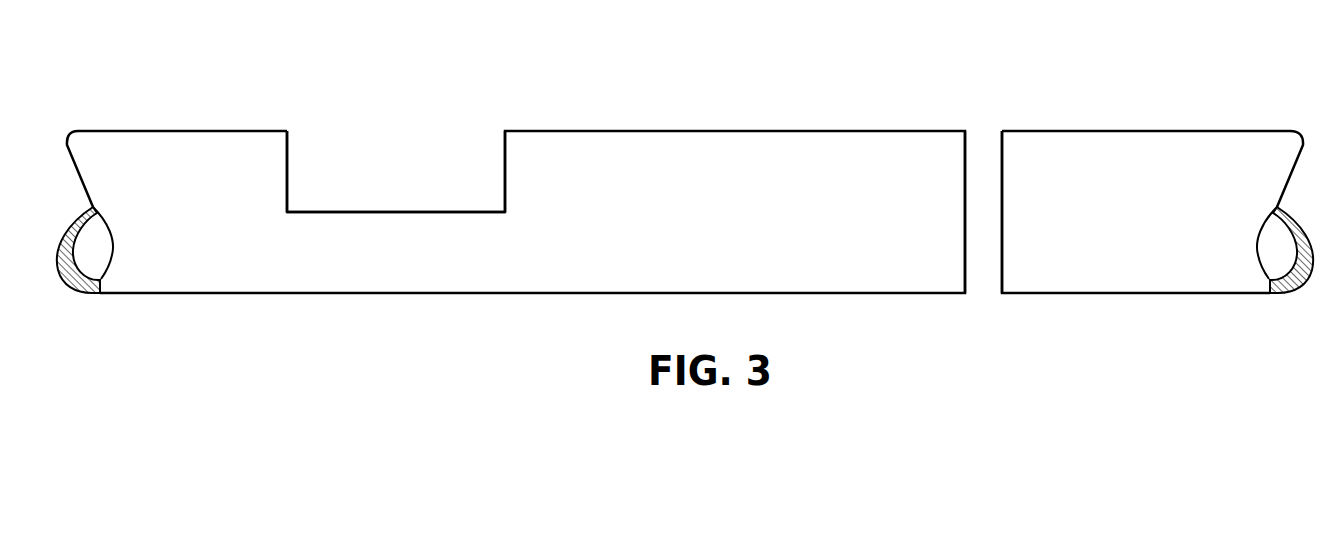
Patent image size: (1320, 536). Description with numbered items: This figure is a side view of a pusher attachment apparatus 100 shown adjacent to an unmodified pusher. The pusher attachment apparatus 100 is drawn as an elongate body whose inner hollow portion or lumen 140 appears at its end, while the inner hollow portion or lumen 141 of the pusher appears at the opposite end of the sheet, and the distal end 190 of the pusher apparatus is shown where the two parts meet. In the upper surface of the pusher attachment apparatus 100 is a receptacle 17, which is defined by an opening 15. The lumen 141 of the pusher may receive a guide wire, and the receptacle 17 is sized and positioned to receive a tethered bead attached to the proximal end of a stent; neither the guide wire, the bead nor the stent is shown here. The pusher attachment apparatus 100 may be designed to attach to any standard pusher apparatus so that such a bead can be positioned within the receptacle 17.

The pusher attachment apparatus 100 is at (724, 123).
The opening 15 is at (360, 212).
The receptacle 17 is at (420, 133).
The inner hollow portion or lumen of the pusher attachment apparatus 140 is at (82, 207).
The inner hollow portion or lumen of the pusher 141 is at (1290, 206).
The distal end of the pusher apparatus 190 is at (1002, 212).